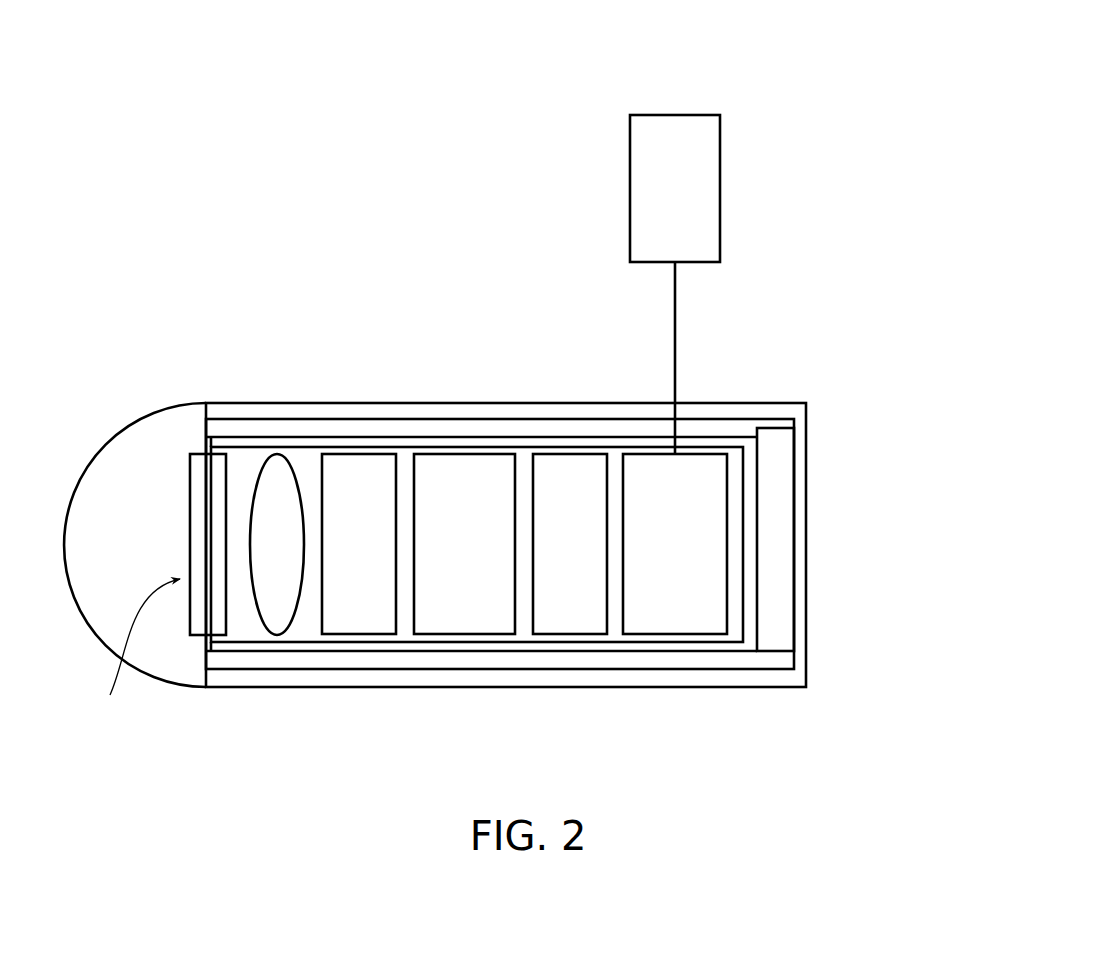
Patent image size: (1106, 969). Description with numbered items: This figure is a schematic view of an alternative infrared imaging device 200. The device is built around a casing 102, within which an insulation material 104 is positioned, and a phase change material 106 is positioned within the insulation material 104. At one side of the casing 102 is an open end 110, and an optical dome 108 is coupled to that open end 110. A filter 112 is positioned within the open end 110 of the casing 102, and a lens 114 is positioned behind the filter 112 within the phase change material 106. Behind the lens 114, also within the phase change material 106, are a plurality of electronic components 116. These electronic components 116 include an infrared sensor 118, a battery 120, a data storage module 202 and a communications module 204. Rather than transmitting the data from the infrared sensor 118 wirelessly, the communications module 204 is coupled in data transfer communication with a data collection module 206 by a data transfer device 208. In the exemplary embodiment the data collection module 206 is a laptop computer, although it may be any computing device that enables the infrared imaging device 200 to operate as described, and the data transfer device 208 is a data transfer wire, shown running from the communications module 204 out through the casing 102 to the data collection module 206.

The infrared imaging device 200 is at (935, 104).
The casing 102 is at (752, 402).
The insulation material 104 is at (768, 670).
The phase change material 106 is at (752, 619).
The optical dome 108 is at (105, 440).
The open end 110 is at (133, 656).
The filter 112 is at (195, 637).
The lens 114 is at (275, 634).
The electronic components 116 is at (484, 361).
The infrared sensor 118 is at (358, 634).
The battery 120 is at (465, 634).
The data storage module 202 is at (569, 634).
The communications module 204 is at (673, 634).
The data collection module 206 is at (630, 171).
The data transfer device 208 is at (675, 308).